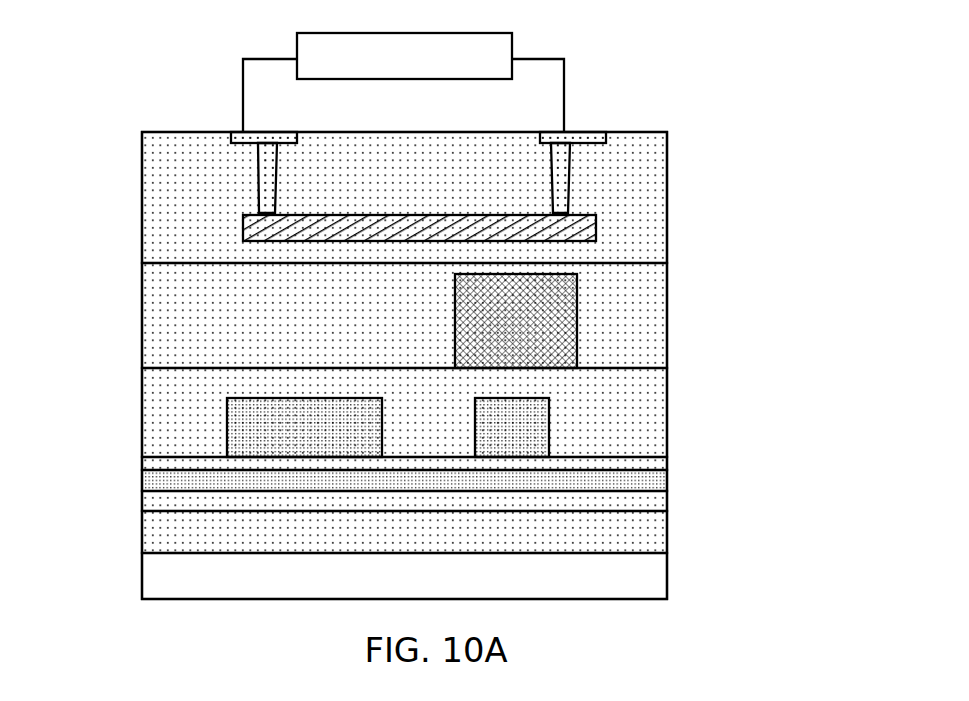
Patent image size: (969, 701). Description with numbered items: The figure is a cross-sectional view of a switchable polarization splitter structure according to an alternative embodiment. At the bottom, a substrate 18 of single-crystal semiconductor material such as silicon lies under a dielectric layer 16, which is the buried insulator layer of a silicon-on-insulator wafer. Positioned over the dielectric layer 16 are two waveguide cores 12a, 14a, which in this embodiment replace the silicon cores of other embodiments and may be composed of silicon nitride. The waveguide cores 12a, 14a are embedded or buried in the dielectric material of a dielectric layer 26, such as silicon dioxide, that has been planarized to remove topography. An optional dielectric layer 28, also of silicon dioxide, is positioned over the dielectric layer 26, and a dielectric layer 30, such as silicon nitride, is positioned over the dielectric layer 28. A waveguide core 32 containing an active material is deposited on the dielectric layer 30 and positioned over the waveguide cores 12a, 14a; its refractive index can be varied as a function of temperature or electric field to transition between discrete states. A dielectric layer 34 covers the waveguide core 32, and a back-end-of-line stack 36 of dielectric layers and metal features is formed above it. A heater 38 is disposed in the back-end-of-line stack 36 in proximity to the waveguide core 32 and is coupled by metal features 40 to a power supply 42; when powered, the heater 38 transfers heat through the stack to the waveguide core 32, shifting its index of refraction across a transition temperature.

The power supply 42 is at (512, 45).
The metal features 40 is at (255, 137).
The heater 38 is at (577, 222).
The back-end-of-line stack 36 is at (192, 212).
The dielectric layer 34 is at (192, 300).
The waveguide core 32 is at (548, 337).
The dielectric layer 26 is at (643, 387).
The waveguide core 12a is at (277, 430).
The waveguide core 14a is at (520, 415).
The dielectric layer 30 is at (643, 462).
The dielectric layer 28 is at (195, 480).
The dielectric layer 16 is at (180, 532).
The substrate 18 is at (183, 583).